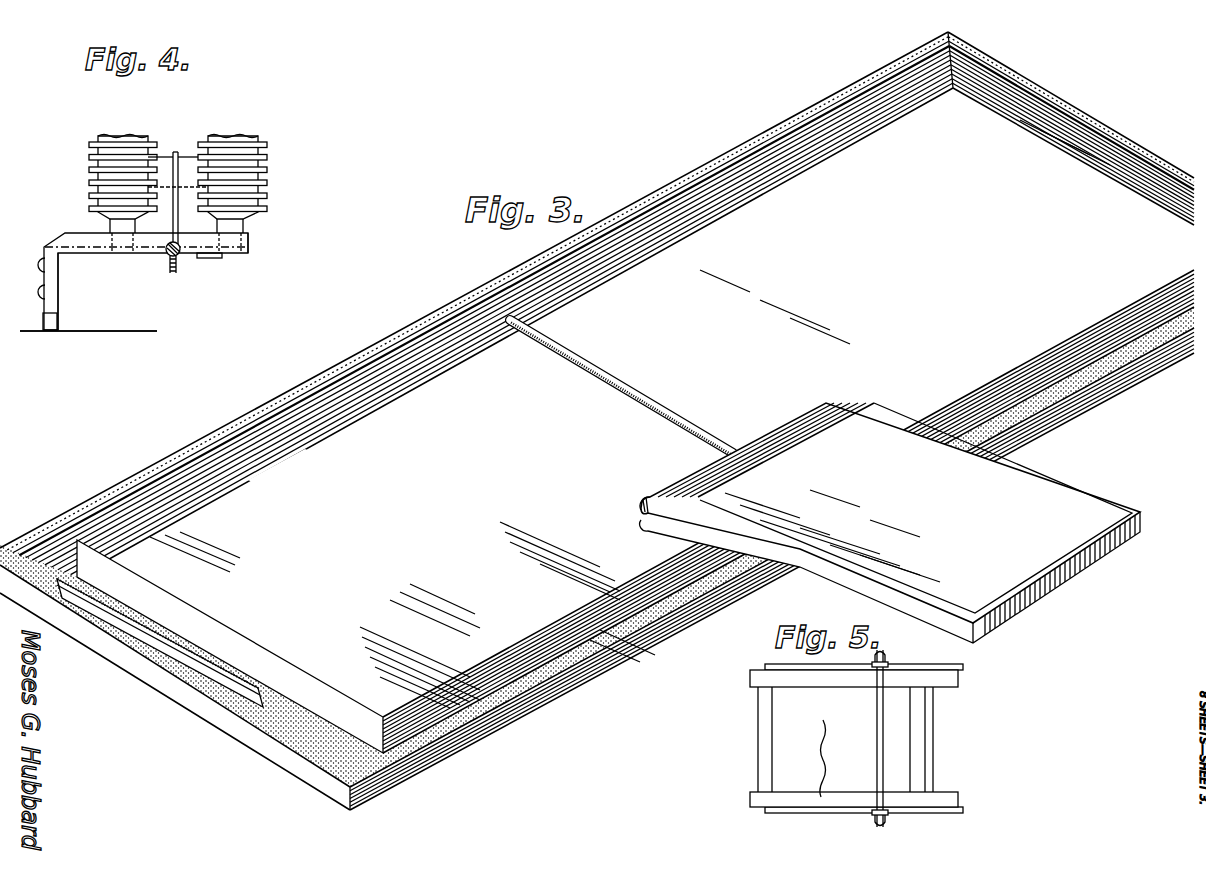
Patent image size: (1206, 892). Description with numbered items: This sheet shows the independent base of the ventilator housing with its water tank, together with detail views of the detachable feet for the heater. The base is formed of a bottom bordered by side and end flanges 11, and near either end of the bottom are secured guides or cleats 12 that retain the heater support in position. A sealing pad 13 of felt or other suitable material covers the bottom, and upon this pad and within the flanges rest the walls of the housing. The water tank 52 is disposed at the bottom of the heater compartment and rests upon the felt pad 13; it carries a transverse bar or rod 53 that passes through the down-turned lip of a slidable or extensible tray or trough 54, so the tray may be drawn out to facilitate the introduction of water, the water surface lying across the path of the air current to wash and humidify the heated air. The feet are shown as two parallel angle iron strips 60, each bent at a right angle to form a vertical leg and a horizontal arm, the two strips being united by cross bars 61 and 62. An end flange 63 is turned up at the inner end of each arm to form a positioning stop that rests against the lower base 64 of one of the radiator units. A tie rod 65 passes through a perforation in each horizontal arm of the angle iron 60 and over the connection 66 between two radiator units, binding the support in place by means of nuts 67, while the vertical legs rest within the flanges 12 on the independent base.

In FIG. 3, the side and end flanges 11 is at (445, 745).
In FIG. 3, the guides or cleats 12 is at (107, 617).
In FIG. 4, the guides or cleats 12 is at (47, 327).
In FIG. 3, the sealing pad 13 is at (377, 790).
In FIG. 3, the water tank 52 is at (528, 665).
In FIG. 3, the transverse bar or rod 53 is at (638, 392).
In FIG. 3, the slidable or extensible tray or trough 54 is at (1046, 518).
In FIG. 4, the angle iron strips 60 is at (93, 240).
In FIG. 5, the angle iron strips 60 is at (830, 678).
In FIG. 5, the cross bar 61 is at (920, 734).
In FIG. 4, the cross bar 62 is at (58, 302).
In FIG. 5, the cross bar 62 is at (762, 737).
In FIG. 4, the end flange 63 is at (248, 245).
In FIG. 5, the end flange 63 is at (958, 682).
In FIG. 4, the lower base of radiator unit 64 is at (228, 230).
In FIG. 4, the tie rod 65 is at (178, 152).
In FIG. 5, the tie rod 65 is at (877, 752).
In FIG. 4, the connection between radiator units 66 is at (163, 163).
In FIG. 4, the nuts 67 is at (170, 262).